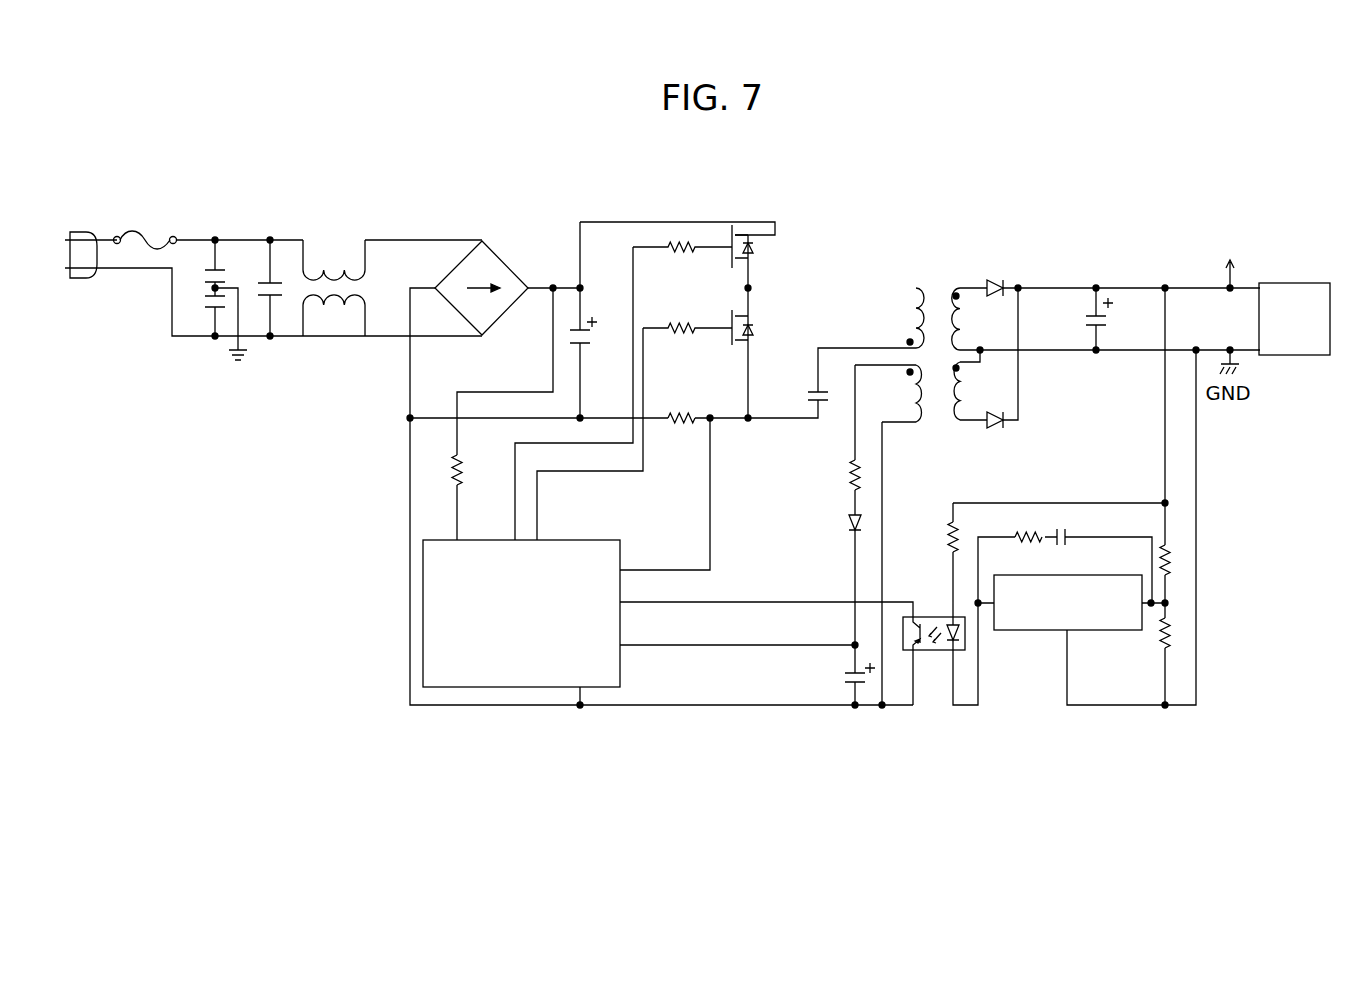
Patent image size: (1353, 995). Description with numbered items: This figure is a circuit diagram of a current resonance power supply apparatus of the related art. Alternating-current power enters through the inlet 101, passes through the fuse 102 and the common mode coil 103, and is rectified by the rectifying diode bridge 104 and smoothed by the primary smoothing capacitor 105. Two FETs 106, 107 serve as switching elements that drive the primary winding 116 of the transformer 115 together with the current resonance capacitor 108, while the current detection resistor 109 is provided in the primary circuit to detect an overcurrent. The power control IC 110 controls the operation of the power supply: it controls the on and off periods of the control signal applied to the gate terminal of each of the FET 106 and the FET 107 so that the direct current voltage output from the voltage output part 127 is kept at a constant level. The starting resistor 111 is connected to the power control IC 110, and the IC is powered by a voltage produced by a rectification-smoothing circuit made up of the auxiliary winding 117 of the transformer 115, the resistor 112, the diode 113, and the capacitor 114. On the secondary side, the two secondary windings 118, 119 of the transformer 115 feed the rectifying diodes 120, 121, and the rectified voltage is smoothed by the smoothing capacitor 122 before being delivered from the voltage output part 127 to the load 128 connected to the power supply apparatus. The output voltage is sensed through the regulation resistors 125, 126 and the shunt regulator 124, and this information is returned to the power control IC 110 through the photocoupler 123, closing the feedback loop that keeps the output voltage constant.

The inlet 101 is at (95, 232).
The fuse 102 is at (150, 236).
The common mode coil 103 is at (322, 252).
The rectifying diode bridge 104 is at (510, 262).
The primary smoothing capacitor 105 is at (575, 343).
The FET 106 is at (725, 262).
The FET 107 is at (725, 342).
The current resonance capacitor 108 is at (812, 397).
The current detection resistor 109 is at (683, 428).
The power control integrated circuit 110 is at (423, 625).
The starting resistor 111 is at (494, 482).
The resistor 112 is at (850, 460).
The diode 113 is at (850, 517).
The capacitor 114 is at (848, 678).
The transformer 115 is at (932, 329).
The primary winding 116 is at (912, 318).
The auxiliary winding 117 is at (912, 393).
The secondary winding 118 is at (965, 338).
The secondary winding 119 is at (965, 400).
The rectifying diode 120 is at (992, 280).
The rectifying diode 121 is at (1003, 428).
The smoothing capacitor 122 is at (1090, 320).
The photocoupler 123 is at (938, 615).
The shunt regulator 124 is at (1107, 632).
The regulation resistor 125 is at (1175, 572).
The regulation resistor 126 is at (1175, 642).
The voltage output part 127 is at (1230, 285).
The load 128 is at (1283, 357).